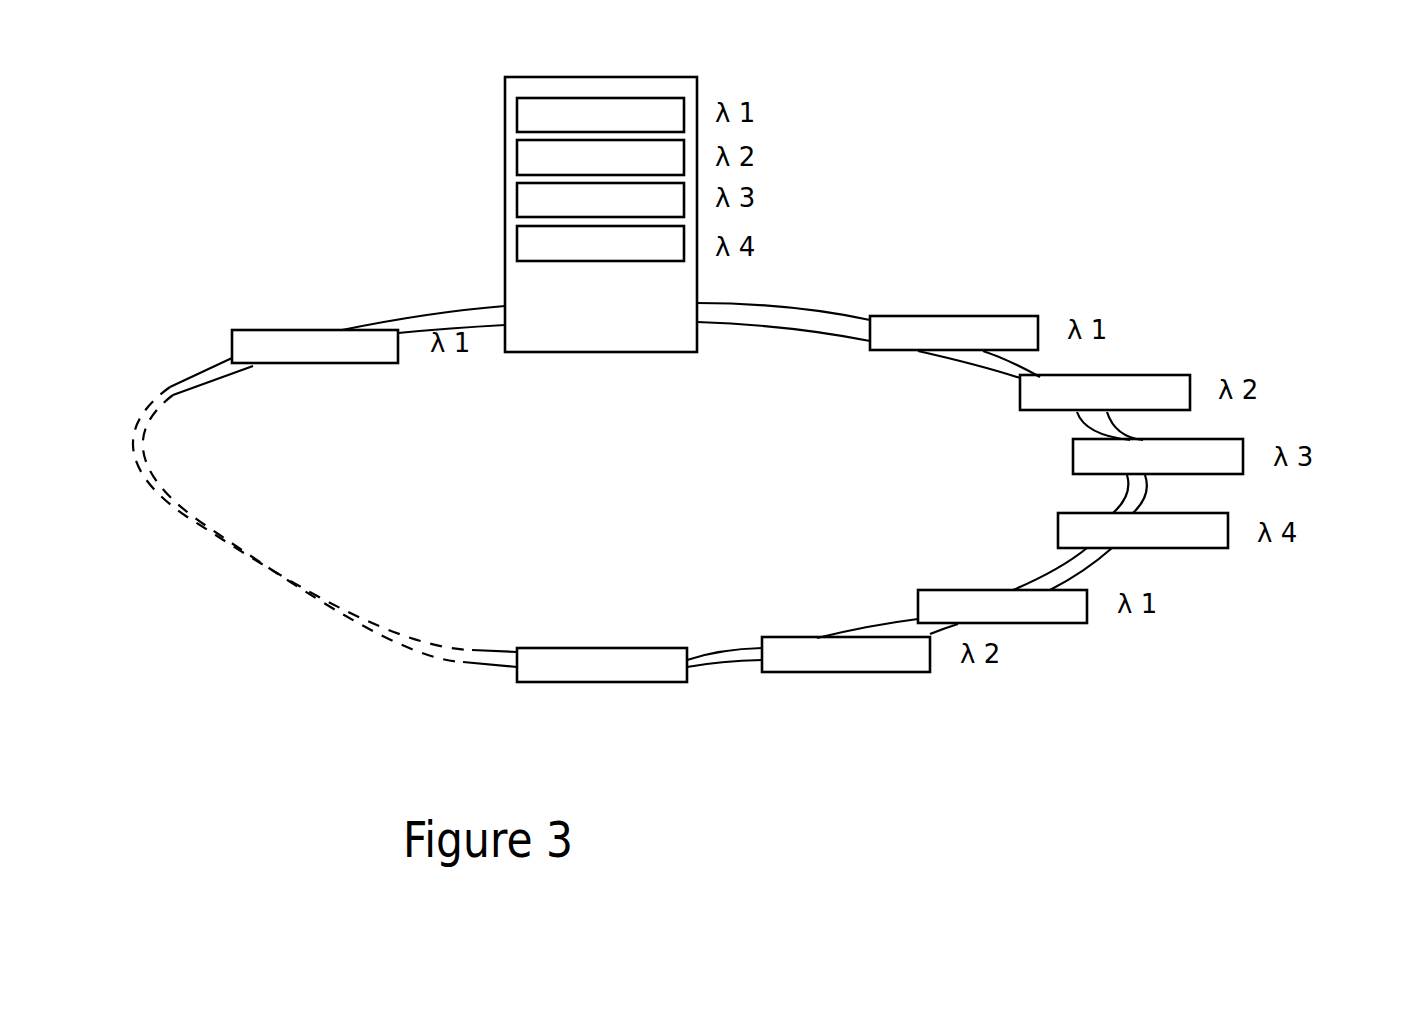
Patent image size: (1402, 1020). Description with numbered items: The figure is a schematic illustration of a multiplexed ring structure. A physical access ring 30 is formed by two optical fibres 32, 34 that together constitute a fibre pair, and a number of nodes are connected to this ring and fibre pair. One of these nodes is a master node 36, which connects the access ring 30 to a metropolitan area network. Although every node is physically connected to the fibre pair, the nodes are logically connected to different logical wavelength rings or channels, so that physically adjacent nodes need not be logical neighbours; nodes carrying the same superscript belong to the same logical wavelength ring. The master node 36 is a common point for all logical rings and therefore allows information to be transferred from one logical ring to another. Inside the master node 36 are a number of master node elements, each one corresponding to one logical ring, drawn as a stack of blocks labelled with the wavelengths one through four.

The physical access ring 30 is at (1000, 113).
The optical fibre 32 is at (493, 648).
The optical fibre 34 is at (507, 668).
The master node 36 is at (647, 82).